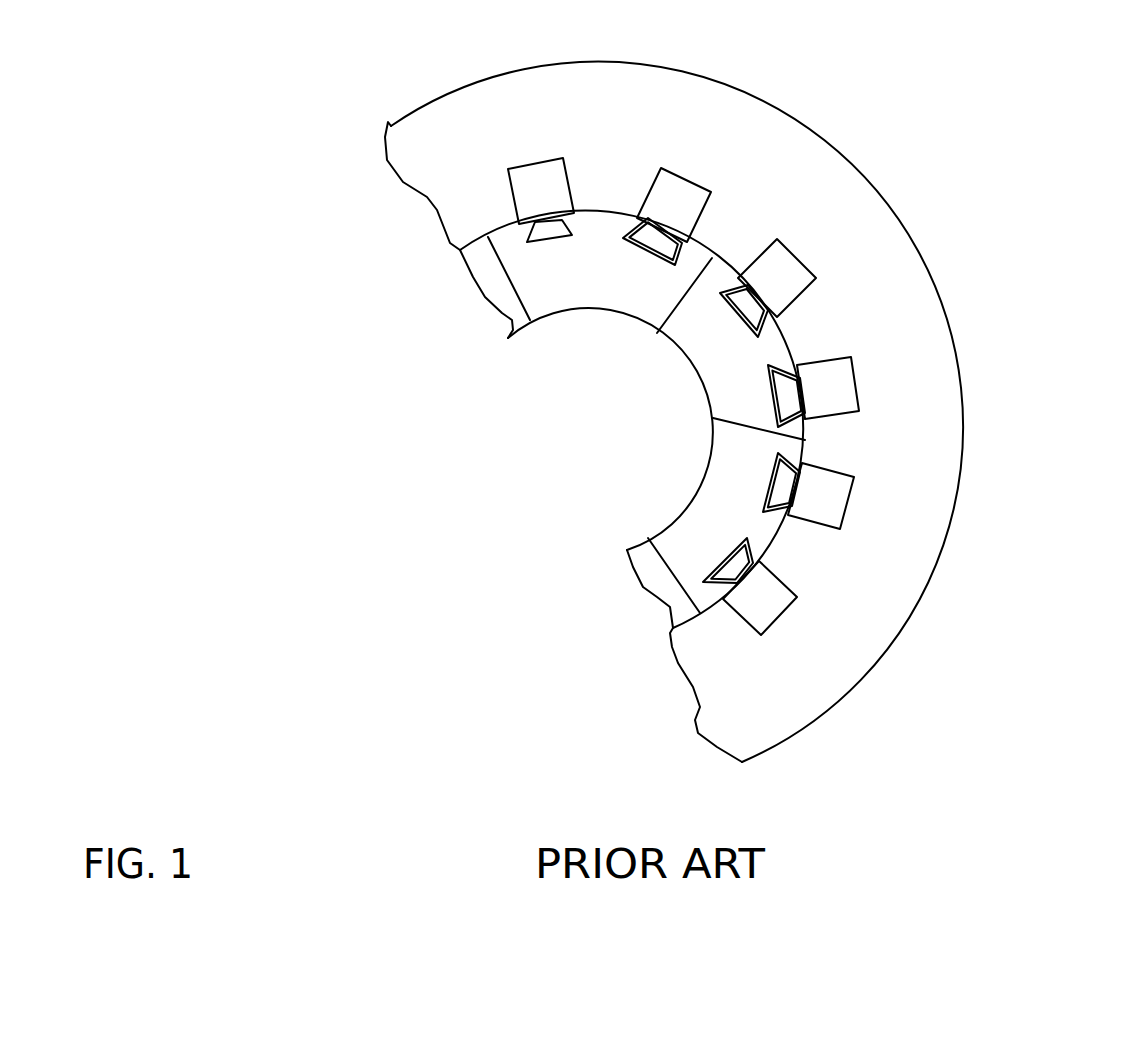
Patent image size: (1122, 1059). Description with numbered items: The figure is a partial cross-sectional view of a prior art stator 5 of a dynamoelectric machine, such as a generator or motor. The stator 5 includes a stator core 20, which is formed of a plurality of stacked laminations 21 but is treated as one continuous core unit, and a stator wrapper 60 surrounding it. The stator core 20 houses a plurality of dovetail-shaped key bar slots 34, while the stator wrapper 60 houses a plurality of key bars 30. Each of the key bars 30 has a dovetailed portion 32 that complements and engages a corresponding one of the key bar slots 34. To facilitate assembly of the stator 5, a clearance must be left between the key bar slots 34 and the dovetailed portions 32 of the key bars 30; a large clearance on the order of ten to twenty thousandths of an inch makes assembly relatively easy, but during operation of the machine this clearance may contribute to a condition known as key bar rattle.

The stator 5 is at (312, 116).
The stator core 20 is at (637, 330).
The stacked laminations 21 is at (624, 294).
The key bars 30 is at (720, 175).
The dovetailed portions 32 is at (546, 230).
The key bar slots 34 is at (787, 457).
The stator wrapper 60 is at (894, 282).